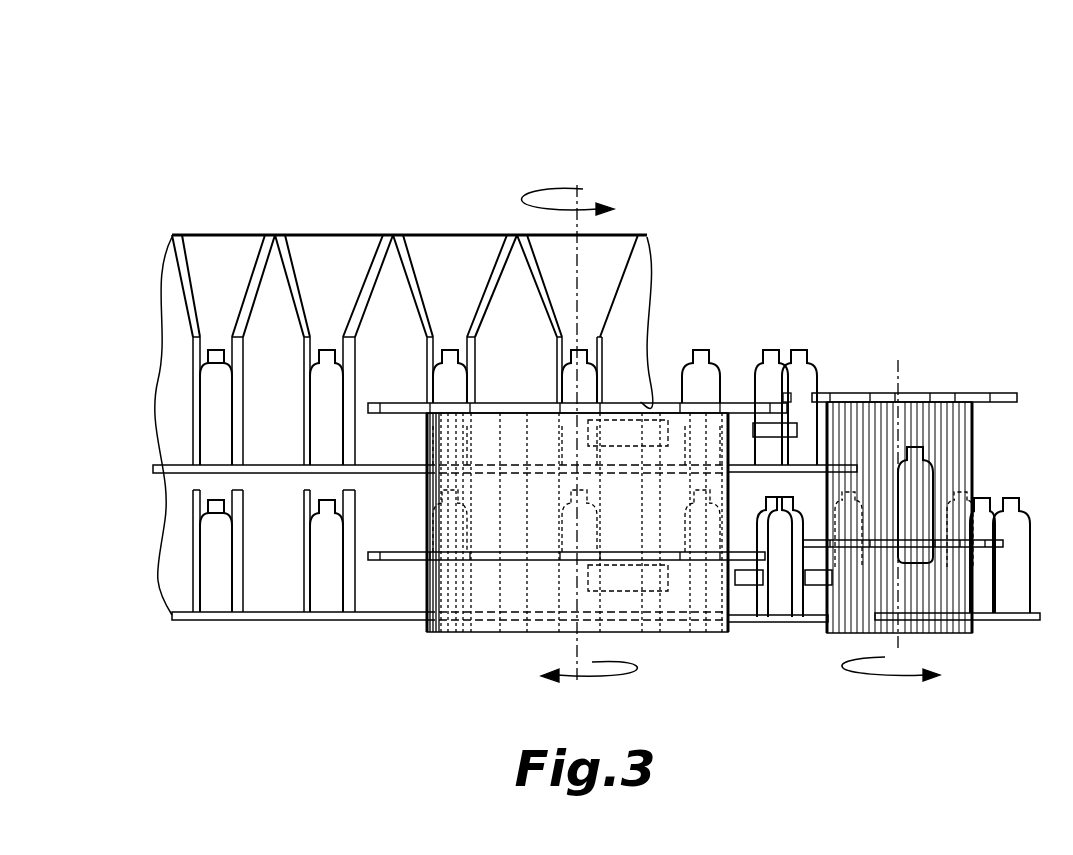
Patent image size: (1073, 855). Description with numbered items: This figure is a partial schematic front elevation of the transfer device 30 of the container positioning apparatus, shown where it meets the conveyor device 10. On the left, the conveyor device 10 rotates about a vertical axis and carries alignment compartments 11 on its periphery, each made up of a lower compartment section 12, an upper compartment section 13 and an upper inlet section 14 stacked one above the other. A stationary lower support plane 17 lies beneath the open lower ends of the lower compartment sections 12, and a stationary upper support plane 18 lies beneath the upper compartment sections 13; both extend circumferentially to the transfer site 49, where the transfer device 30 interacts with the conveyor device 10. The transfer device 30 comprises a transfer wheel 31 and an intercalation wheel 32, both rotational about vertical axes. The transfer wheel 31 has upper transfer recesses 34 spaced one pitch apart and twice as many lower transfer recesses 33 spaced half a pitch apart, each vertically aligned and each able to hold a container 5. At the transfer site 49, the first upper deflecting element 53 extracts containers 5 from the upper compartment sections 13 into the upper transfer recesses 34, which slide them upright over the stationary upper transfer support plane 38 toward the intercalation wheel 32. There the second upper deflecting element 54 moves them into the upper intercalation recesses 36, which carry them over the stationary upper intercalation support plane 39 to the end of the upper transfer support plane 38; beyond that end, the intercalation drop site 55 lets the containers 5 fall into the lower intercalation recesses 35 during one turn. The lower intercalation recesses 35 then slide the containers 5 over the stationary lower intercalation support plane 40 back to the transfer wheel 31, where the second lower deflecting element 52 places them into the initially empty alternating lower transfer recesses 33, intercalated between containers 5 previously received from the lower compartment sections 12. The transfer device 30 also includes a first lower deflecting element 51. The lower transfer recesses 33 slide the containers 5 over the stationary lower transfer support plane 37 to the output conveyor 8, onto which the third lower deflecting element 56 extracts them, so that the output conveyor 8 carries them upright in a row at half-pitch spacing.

The container 5 is at (205, 407).
The output conveyor 8 is at (787, 618).
The conveyor device 10 is at (356, 200).
The alignment compartment 11 is at (178, 442).
The lower compartment section 12 is at (197, 500).
The upper compartment section 13 is at (198, 357).
The upper inlet section 14 is at (222, 252).
The stationary lower support plane 17 is at (290, 616).
The stationary upper support plane 18 is at (290, 466).
The transfer device 30 is at (775, 262).
The transfer wheel 31 is at (498, 653).
The intercalation wheel 32 is at (950, 652).
The lower transfer recess 33 is at (452, 557).
The upper transfer recess 34 is at (437, 400).
The lower intercalation recess 35 is at (977, 537).
The upper intercalation recess 36 is at (916, 415).
The stationary lower transfer support plane 37 is at (750, 622).
The stationary upper transfer support plane 38 is at (737, 464).
The stationary upper intercalation support plane 39 is at (804, 462).
The stationary lower intercalation support plane 40 is at (1012, 620).
The transfer site 49 is at (577, 166).
The first stationary lower deflecting element 51 is at (640, 585).
The second stationary lower deflecting element 52 is at (818, 586).
The first stationary upper deflecting element 53 is at (616, 404).
The second stationary upper deflecting element 54 is at (797, 420).
The intercalation drop site 55 is at (885, 422).
The third stationary lower deflecting element 56 is at (748, 587).